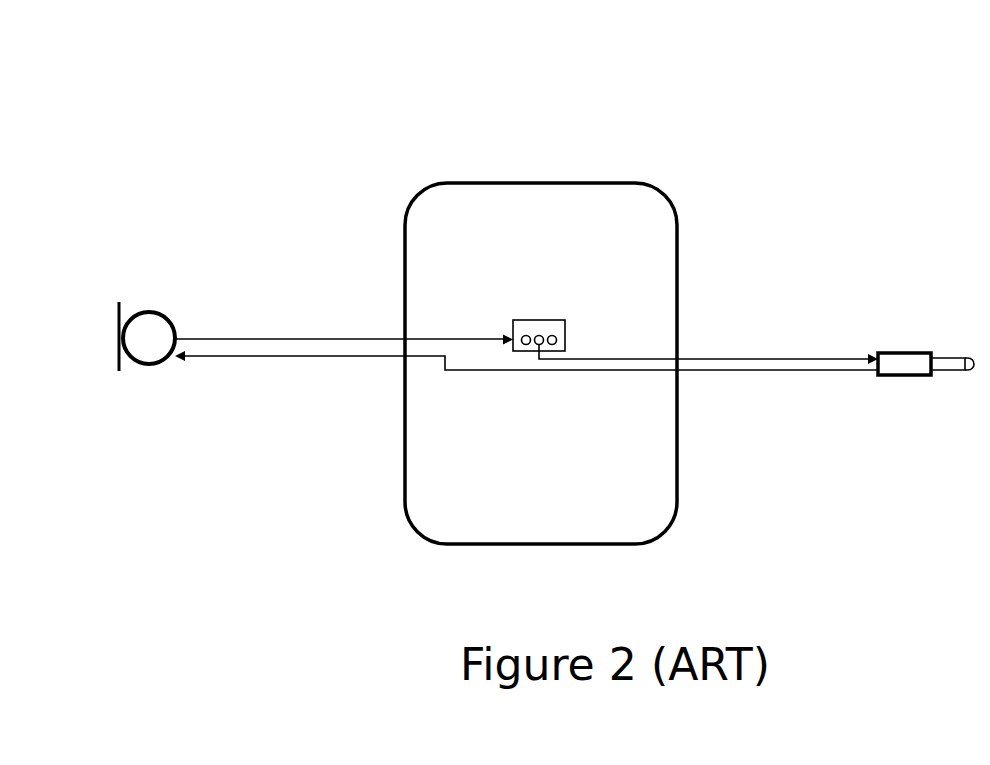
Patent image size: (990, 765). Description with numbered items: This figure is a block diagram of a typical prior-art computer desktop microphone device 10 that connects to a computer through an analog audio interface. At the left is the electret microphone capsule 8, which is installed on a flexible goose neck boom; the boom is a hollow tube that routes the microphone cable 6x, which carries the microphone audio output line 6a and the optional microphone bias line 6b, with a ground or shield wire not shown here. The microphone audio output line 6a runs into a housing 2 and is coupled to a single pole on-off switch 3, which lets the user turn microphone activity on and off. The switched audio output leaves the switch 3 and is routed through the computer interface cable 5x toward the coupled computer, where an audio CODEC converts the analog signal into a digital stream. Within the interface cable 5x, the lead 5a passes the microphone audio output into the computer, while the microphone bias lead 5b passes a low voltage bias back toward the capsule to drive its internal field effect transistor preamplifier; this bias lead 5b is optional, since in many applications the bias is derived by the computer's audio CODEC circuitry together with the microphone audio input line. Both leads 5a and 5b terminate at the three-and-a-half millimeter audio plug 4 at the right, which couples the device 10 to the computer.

The computer desktop microphone device 10 is at (288, 94).
The housing 2 is at (677, 243).
The single pole switch 3 is at (548, 320).
The electret microphone capsule 8 is at (141, 312).
The microphone cable 6x is at (426, 346).
The microphone audio output line 6a is at (257, 337).
The microphone bias line 6b is at (257, 356).
The computer interface cable 5x is at (722, 365).
The audio output lead 5a is at (784, 357).
The microphone bias lead 5b is at (787, 373).
The 3.5 mm audio plug 4 is at (903, 376).